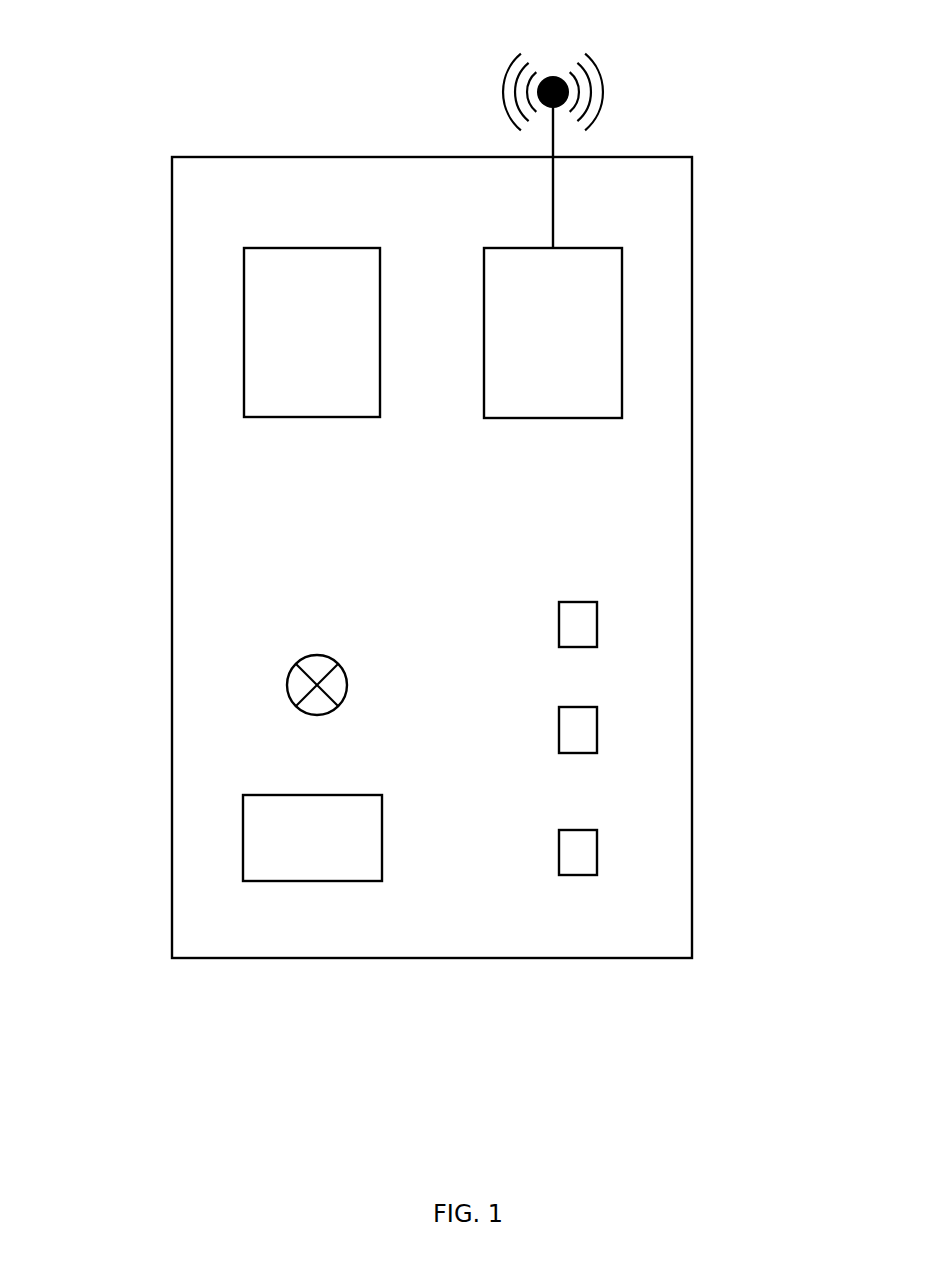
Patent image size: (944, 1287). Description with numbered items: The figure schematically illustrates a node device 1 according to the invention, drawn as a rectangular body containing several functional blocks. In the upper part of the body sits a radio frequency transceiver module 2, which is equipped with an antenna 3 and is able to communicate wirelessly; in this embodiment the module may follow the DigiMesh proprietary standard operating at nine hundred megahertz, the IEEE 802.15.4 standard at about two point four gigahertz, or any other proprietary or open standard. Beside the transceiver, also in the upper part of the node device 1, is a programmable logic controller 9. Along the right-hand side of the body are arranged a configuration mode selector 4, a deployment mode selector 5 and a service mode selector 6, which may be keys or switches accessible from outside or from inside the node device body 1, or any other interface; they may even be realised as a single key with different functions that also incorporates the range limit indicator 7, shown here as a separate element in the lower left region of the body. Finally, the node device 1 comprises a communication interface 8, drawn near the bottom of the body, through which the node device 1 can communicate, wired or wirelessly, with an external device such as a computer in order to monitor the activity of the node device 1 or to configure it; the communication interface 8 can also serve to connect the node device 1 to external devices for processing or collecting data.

The node device 1 is at (393, 484).
The radio frequency transceiver module 2 is at (558, 330).
The antenna 3 is at (557, 145).
The configuration mode selector 4 is at (578, 624).
The deployment mode selector 5 is at (578, 733).
The service mode selector 6 is at (578, 856).
The range limit indicator 7 is at (303, 685).
The communication interface 8 is at (290, 838).
The programmable logic controller 9 is at (312, 330).